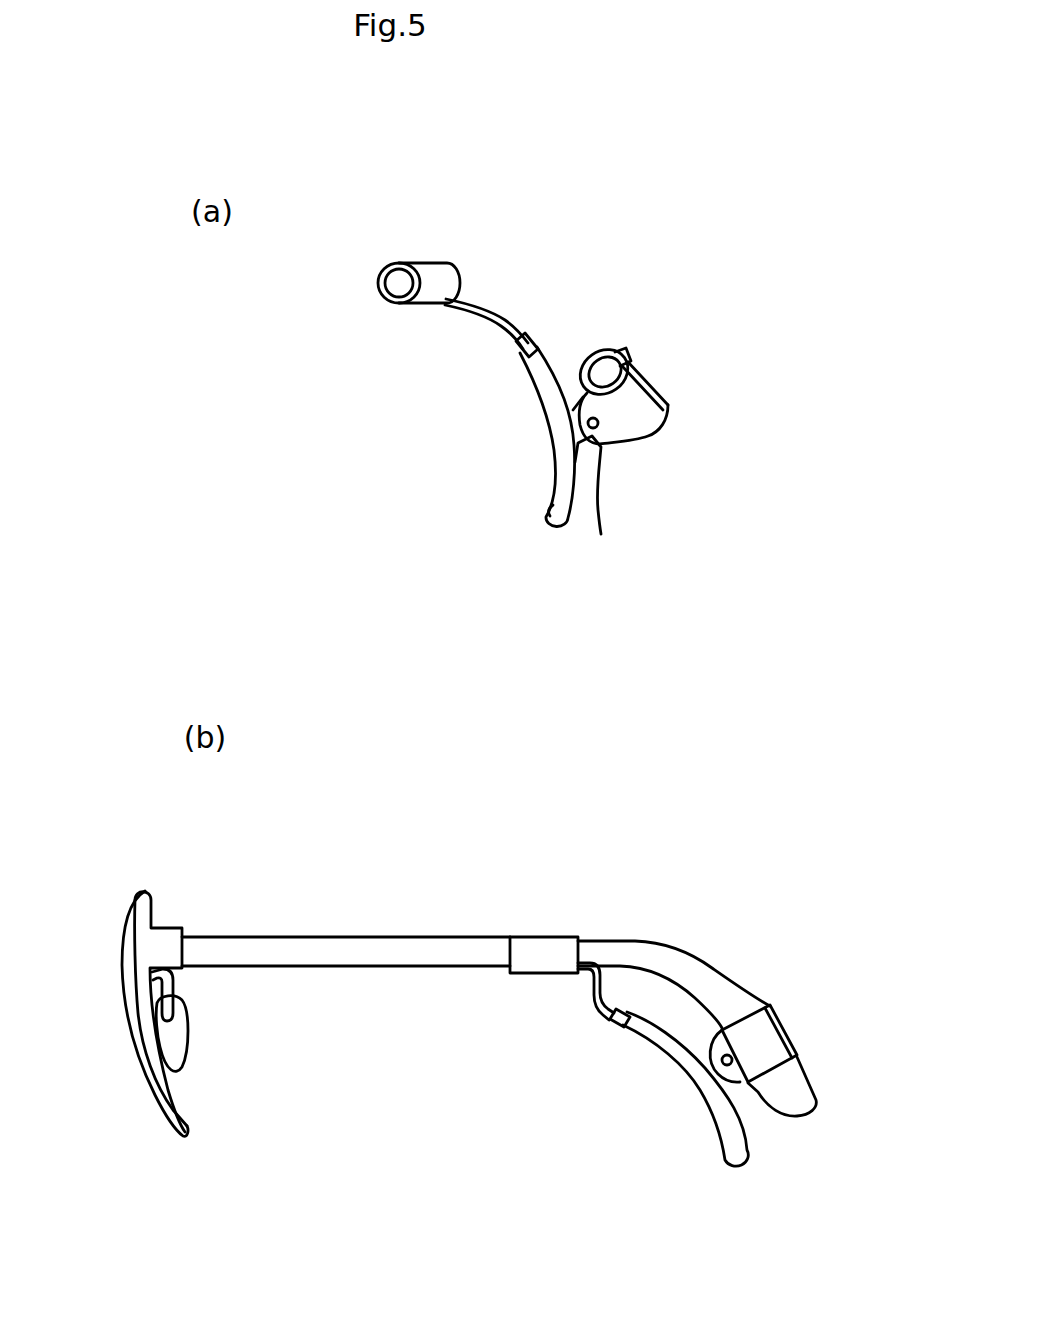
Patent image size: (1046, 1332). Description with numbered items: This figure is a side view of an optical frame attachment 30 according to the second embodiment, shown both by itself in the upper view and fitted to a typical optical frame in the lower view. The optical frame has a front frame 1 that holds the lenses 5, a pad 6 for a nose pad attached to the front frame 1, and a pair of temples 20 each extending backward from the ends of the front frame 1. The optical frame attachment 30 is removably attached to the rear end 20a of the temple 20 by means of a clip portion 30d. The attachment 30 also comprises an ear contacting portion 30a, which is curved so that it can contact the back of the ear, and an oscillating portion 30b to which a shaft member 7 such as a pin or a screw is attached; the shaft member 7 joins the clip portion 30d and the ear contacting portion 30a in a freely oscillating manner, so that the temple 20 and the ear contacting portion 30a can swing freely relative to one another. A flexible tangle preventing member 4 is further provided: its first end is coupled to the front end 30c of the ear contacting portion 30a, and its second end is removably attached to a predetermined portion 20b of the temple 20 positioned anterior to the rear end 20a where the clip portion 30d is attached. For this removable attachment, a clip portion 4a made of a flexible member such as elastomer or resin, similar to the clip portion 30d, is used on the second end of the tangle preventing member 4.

The front frame 1 is at (143, 890).
The flexible tangle preventing member 4 is at (493, 307).
The clip portion 4a is at (509, 576).
The lenses 5 is at (125, 962).
The pad 6 is at (178, 1041).
The shaft member 7 is at (595, 427).
The temple 20 is at (380, 947).
The rear end of the temple 20a is at (702, 711).
The predetermined portion of the temple 20b is at (543, 937).
The optical frame attachment 30 is at (545, 535).
The ear contacting portion 30a is at (552, 512).
The oscillating portion 30b is at (601, 534).
The front end of the ear contacting portion 30c is at (518, 342).
The clip portion 30d is at (637, 400).